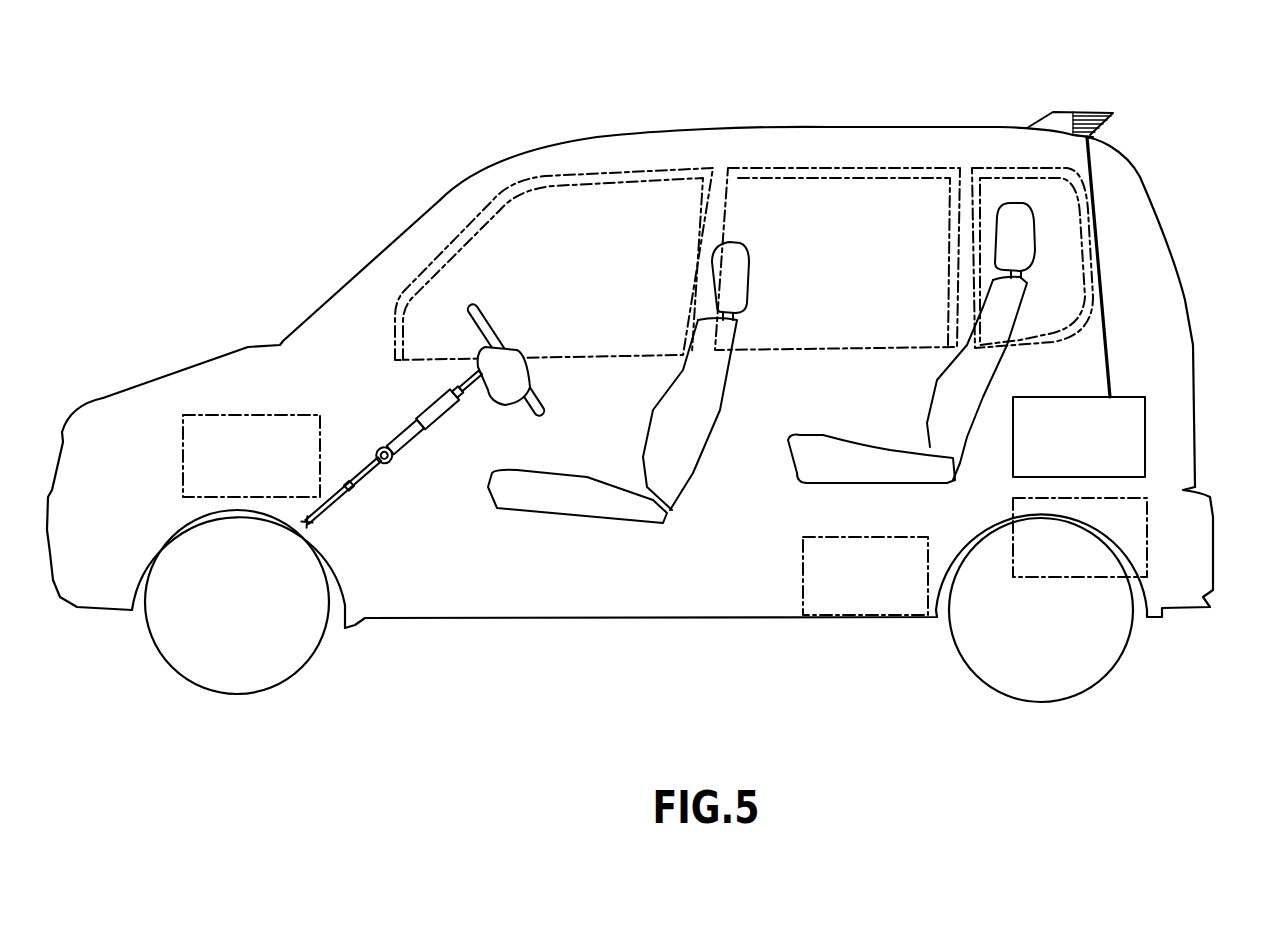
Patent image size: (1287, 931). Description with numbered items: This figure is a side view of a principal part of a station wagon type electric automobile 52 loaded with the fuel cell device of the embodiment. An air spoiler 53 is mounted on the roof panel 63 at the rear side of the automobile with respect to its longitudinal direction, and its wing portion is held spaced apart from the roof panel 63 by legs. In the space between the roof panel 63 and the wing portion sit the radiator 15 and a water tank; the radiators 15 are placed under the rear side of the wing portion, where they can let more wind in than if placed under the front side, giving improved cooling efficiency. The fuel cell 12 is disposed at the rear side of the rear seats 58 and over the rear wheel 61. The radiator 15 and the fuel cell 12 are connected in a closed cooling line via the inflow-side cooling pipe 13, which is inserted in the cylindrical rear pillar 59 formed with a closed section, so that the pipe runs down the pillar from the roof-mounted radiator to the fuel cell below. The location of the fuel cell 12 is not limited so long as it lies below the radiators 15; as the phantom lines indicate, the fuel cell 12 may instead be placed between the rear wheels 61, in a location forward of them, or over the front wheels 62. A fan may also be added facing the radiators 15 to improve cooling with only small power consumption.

The fuel cell 12 is at (257, 415).
The inflow-side cooling pipe 13 is at (1105, 335).
The radiator 15 is at (1108, 121).
The electric automobile 52 is at (655, 672).
The air spoiler 53 is at (1047, 111).
The rear seats 58 is at (932, 402).
The rear pillar 59 is at (1140, 232).
The rear wheel 61 is at (953, 640).
The front wheel 62 is at (323, 647).
The roof panel 63 is at (867, 127).